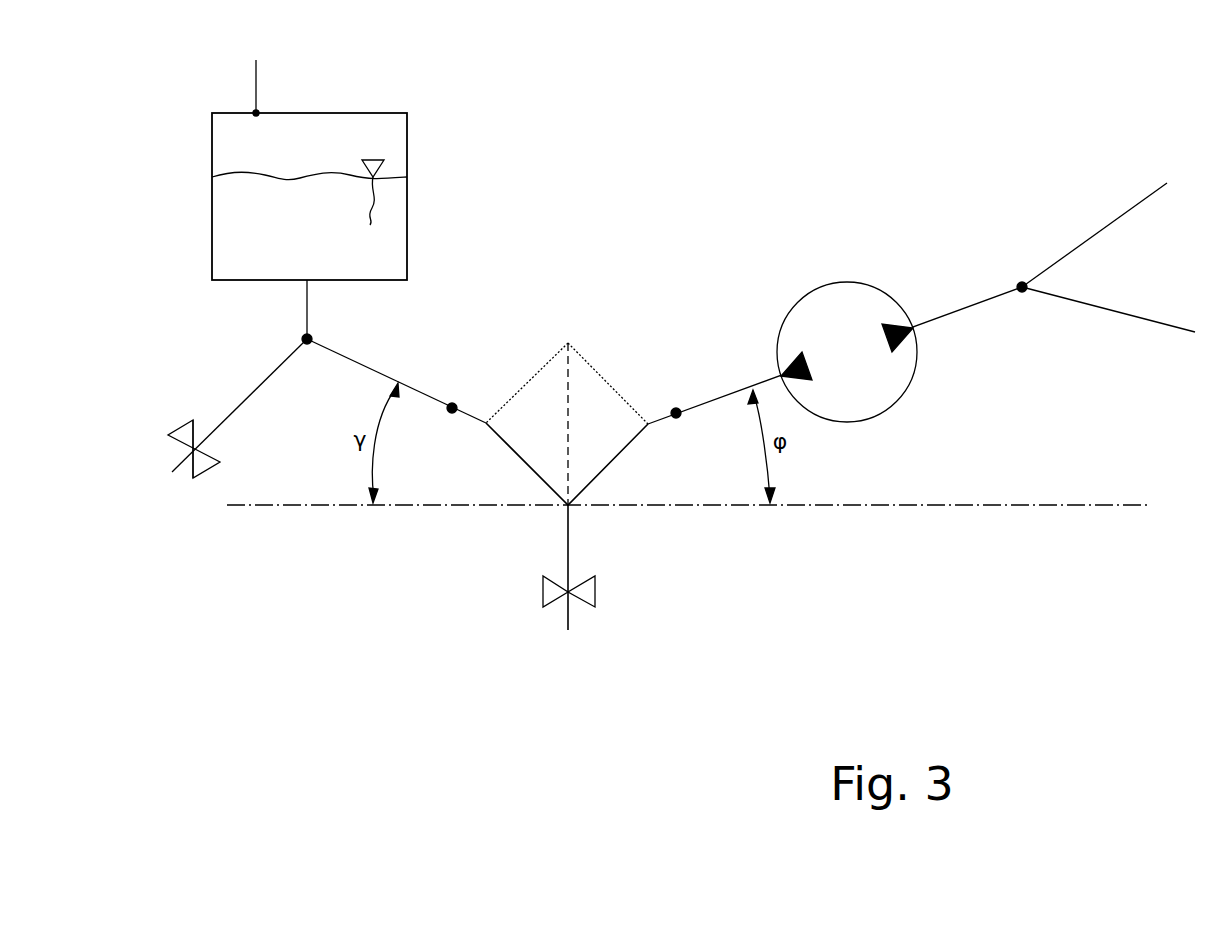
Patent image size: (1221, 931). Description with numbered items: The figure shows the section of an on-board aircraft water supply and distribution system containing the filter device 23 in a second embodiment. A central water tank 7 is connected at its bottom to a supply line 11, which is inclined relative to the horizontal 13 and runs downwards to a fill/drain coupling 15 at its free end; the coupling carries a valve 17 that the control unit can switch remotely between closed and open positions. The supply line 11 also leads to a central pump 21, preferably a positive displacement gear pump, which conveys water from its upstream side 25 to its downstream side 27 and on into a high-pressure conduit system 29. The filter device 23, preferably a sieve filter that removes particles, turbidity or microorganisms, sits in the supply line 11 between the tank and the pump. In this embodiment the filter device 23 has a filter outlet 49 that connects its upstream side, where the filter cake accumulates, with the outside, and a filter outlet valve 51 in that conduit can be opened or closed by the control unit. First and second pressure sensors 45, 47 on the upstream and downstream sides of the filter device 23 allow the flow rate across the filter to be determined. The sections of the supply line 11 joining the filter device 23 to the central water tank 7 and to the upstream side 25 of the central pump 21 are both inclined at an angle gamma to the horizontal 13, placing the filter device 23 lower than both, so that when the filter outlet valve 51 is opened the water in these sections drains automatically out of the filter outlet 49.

The central water tank 7 is at (276, 245).
The supply line 11 is at (368, 362).
The horizontal 13 is at (1067, 508).
The fill/drain coupling 15 is at (183, 465).
The valve 17 is at (185, 428).
The central pump 21 is at (841, 312).
The filter device 23 is at (570, 380).
The upstream side 25 is at (781, 376).
The downstream side 27 is at (915, 320).
The high-pressure conduit system 29 is at (1017, 303).
The first pressure sensor 45 is at (452, 408).
The second pressure sensor 47 is at (676, 413).
The filter outlet 49 is at (565, 552).
The filter outlet valve 51 is at (552, 590).